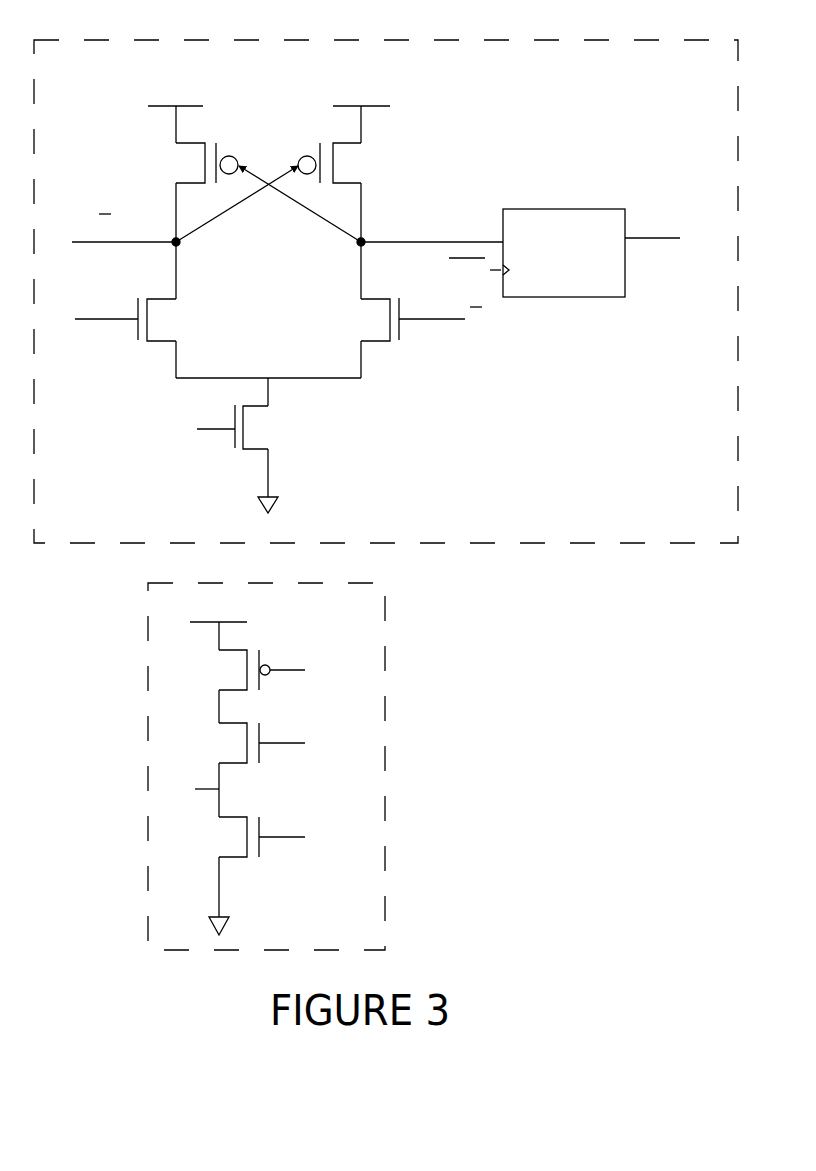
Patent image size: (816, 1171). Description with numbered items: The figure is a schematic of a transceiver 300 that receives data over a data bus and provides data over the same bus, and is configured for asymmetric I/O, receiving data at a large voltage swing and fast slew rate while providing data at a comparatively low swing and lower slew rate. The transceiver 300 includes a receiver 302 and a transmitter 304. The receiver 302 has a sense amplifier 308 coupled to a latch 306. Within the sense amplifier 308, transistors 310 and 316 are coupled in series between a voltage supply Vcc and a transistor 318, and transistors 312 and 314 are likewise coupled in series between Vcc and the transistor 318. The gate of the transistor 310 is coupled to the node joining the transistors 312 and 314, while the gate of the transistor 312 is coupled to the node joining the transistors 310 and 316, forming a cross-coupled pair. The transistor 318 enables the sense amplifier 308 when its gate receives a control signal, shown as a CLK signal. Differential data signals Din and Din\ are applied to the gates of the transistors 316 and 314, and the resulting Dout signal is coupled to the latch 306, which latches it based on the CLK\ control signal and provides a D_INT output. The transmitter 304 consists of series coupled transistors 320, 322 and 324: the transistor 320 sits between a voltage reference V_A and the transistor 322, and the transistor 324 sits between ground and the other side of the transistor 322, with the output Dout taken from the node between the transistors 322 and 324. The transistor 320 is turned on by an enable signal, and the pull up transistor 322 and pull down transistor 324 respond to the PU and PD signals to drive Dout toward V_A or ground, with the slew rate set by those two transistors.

The transceiver 300 is at (614, 795).
The receiver 302 is at (613, 37).
The transmitter 304 is at (387, 686).
The latch 306 is at (557, 209).
The sense amplifier 308 is at (252, 85).
The transistor 310 is at (178, 165).
The transistor 312 is at (355, 165).
The transistor 314 is at (365, 312).
The transistor 316 is at (172, 312).
The transistor 318 is at (268, 428).
The transistor 320 is at (231, 672).
The pull up transistor 322 is at (226, 741).
The pull down transistor 324 is at (226, 840).